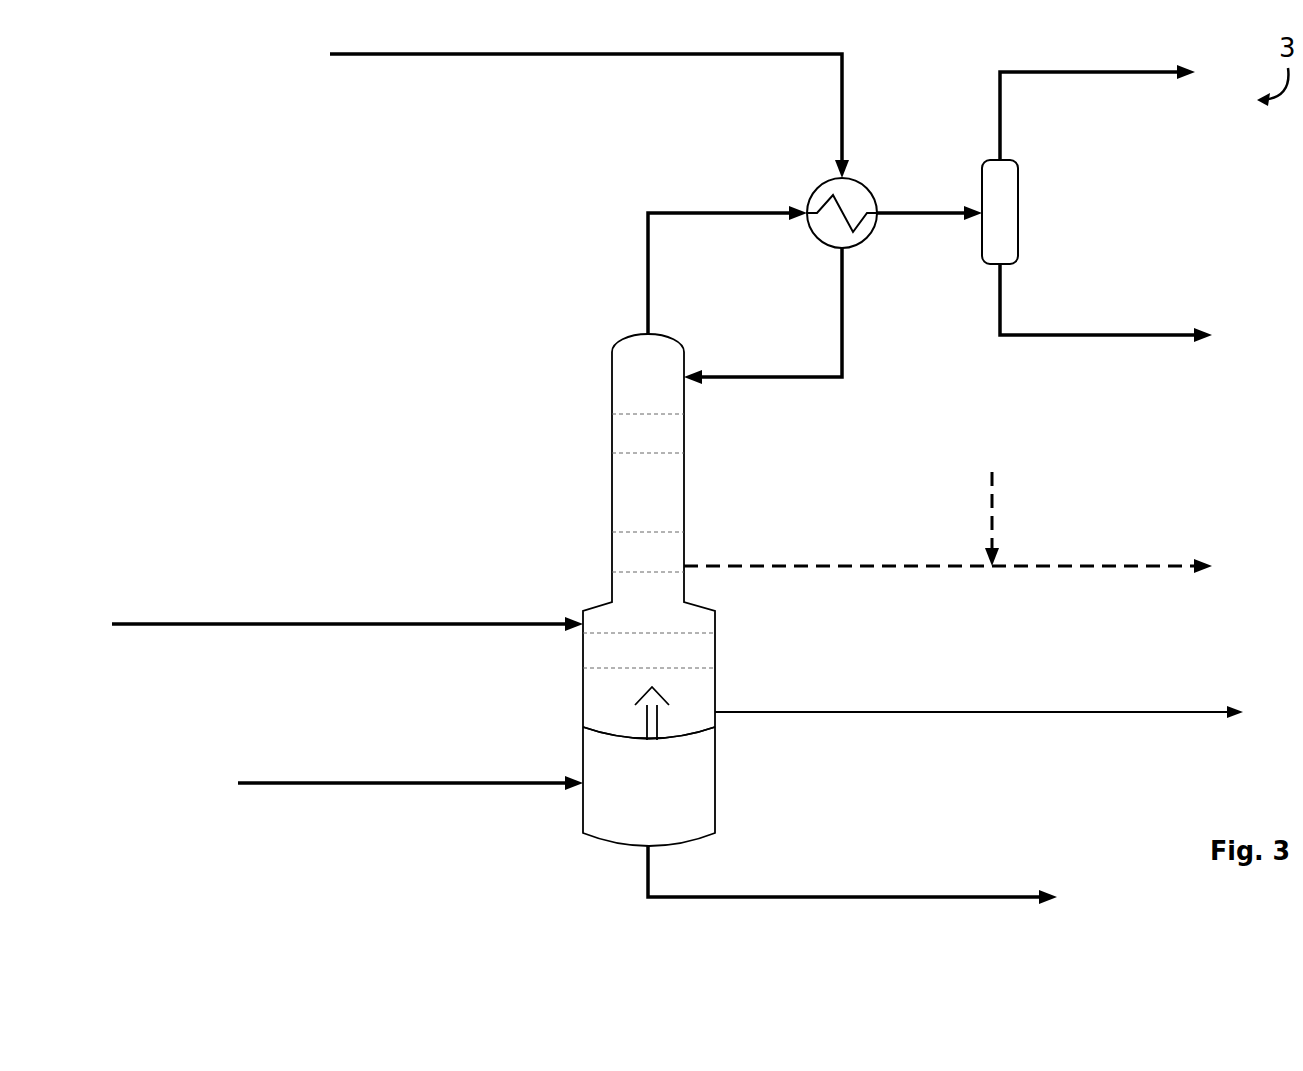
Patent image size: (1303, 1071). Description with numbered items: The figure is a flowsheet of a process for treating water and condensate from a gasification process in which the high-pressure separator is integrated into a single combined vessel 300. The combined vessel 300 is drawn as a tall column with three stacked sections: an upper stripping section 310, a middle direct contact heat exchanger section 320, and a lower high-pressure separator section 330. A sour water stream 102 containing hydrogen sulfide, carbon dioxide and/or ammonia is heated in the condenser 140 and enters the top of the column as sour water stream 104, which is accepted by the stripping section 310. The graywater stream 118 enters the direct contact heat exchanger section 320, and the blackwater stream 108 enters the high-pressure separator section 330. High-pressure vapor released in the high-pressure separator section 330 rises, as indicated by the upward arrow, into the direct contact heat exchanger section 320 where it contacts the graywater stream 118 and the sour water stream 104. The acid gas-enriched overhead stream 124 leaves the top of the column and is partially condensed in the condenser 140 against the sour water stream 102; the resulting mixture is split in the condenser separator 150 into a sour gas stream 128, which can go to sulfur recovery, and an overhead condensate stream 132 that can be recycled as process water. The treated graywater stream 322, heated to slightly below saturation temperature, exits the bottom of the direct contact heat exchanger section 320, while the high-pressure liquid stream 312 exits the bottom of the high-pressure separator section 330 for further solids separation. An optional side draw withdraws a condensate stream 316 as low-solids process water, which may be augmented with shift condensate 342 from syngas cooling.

The sour water stream 102 is at (475, 56).
The sour water stream 104 is at (805, 378).
The blackwater stream 108 is at (365, 785).
The graywater stream 118 is at (250, 626).
The acid gas-enriched overhead stream 124 is at (700, 215).
The sour gas stream 128 is at (1104, 74).
The overhead condensate stream 132 is at (1105, 337).
The condenser 140 is at (812, 188).
The condenser separator 150 is at (1018, 211).
The combined vessel 300 is at (612, 375).
The stripping section 310 is at (629, 499).
The high-pressure liquid stream 312 is at (891, 895).
The condensate stream 316 is at (804, 560).
The direct contact heat exchanger section 320 is at (633, 669).
The treated graywater stream 322 is at (833, 708).
The high-pressure separator section 330 is at (631, 787).
The shift condensate 342 is at (994, 503).